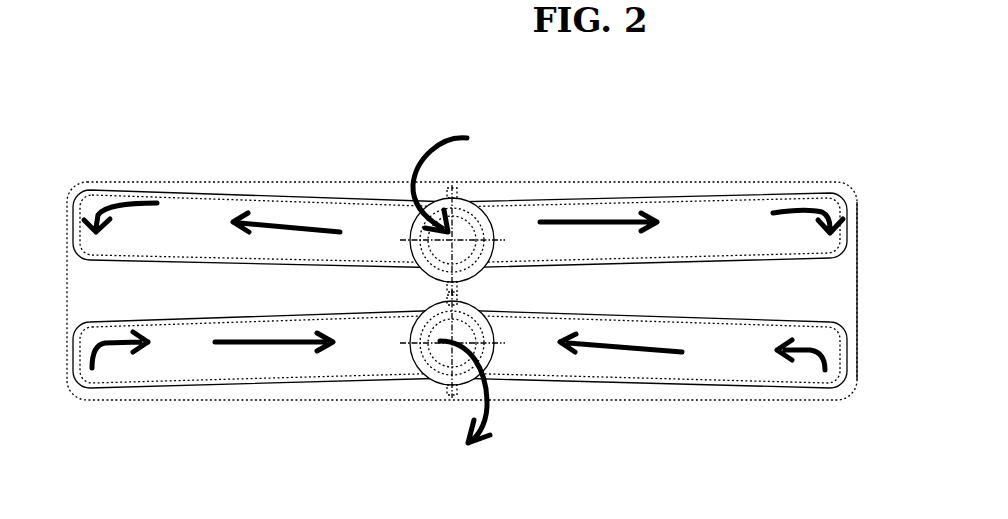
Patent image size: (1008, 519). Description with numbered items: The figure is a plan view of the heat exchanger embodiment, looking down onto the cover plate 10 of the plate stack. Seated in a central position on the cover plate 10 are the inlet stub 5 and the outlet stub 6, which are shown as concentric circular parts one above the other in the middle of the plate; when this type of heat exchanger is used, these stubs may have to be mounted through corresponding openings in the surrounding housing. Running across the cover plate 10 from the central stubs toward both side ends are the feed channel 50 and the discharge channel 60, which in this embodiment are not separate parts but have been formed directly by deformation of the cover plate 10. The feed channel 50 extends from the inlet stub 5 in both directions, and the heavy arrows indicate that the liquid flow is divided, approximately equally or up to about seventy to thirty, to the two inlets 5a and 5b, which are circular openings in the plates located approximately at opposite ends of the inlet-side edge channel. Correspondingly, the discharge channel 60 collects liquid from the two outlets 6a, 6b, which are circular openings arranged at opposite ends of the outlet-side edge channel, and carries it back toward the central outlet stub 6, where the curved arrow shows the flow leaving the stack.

The cover plate 10 is at (617, 188).
The inlet stub 5 is at (438, 228).
The outlet stub 6 is at (437, 352).
The feed channel 50 is at (217, 235).
The discharge channel 60 is at (248, 355).
The inlet 5a is at (823, 217).
The inlet 5b is at (87, 233).
The outlet 6a is at (833, 345).
The outlet 6b is at (108, 355).